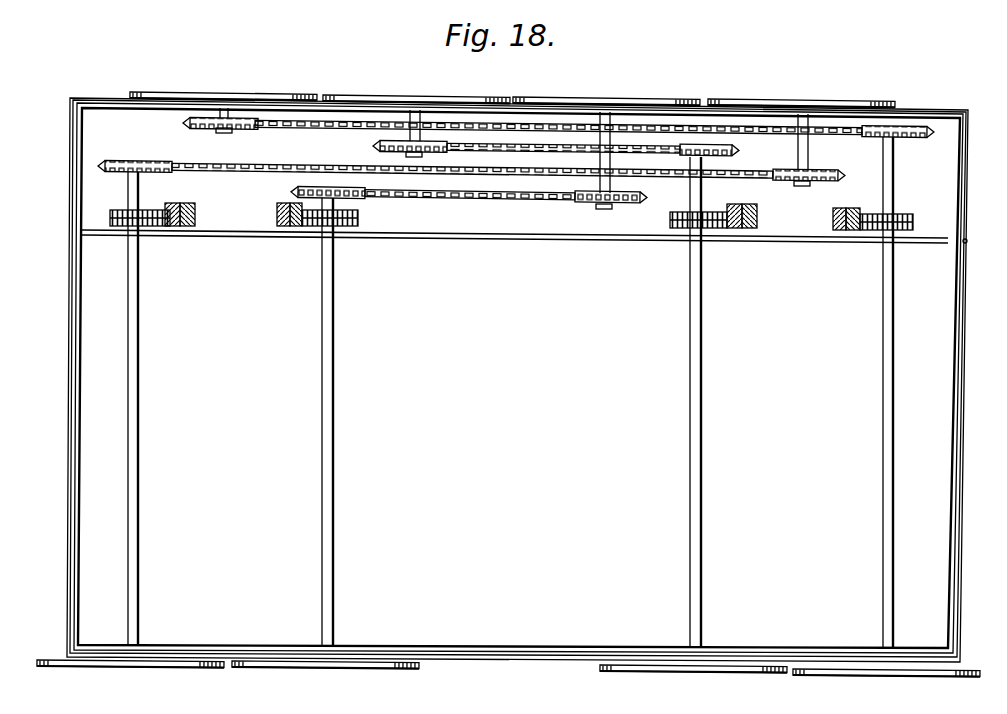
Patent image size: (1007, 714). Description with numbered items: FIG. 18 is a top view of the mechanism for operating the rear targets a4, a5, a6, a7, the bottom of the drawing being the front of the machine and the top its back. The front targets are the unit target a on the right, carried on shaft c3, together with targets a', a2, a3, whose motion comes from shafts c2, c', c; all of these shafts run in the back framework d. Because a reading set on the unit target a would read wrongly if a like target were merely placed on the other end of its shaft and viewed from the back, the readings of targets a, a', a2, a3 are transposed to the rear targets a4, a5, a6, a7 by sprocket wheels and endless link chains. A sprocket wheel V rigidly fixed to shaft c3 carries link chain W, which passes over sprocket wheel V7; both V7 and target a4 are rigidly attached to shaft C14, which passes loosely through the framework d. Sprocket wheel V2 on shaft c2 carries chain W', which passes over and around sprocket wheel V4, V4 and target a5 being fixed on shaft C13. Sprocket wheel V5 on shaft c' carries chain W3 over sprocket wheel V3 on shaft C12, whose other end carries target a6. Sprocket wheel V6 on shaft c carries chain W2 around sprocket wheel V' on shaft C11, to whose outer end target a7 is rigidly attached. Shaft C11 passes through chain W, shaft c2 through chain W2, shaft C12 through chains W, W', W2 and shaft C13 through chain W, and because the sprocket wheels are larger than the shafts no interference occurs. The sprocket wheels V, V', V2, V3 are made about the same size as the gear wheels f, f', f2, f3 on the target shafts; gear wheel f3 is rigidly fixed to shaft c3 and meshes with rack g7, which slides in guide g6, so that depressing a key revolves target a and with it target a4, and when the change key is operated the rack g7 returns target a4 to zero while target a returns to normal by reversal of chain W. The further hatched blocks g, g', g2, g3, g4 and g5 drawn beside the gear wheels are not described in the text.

The back framework d is at (489, 238).
The shaft c is at (146, 408).
The shaft c' is at (344, 422).
The shaft c2 is at (703, 372).
The shaft c3 is at (895, 458).
The unit target a is at (886, 685).
The target a' is at (693, 681).
The target a2 is at (316, 669).
The target a3 is at (132, 668).
The rear target a4 is at (222, 85).
The rear target a5 is at (428, 95).
The rear target a6 is at (596, 99).
The rear target a7 is at (826, 100).
The sprocket wheel V is at (905, 133).
The sprocket wheel V' is at (817, 178).
The sprocket wheel V2 is at (722, 148).
The sprocket wheel V3 is at (625, 195).
The sprocket wheel V4 is at (399, 144).
The sprocket wheel V5 is at (303, 192).
The sprocket wheel V6 is at (113, 160).
The sprocket wheel V7 is at (190, 124).
The link chain W is at (558, 140).
The chain W' is at (563, 156).
The chain W2 is at (484, 176).
The chain W3 is at (462, 198).
The shaft C11 is at (802, 186).
The shaft C12 is at (604, 209).
The shaft C13 is at (424, 158).
The shaft C14 is at (224, 134).
The gear wheel f is at (133, 205).
The gear wheel f' is at (342, 214).
The gear wheel f2 is at (670, 220).
The gear wheel f3 is at (913, 220).
The block g is at (172, 203).
The block g' is at (193, 203).
The block g2 is at (277, 214).
The block g3 is at (283, 203).
The block g4 is at (740, 204).
The block g5 is at (757, 216).
The guide g6 is at (833, 220).
The rack g7 is at (852, 208).